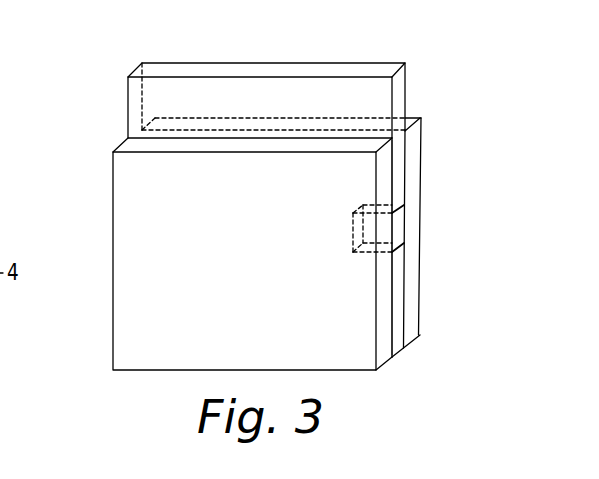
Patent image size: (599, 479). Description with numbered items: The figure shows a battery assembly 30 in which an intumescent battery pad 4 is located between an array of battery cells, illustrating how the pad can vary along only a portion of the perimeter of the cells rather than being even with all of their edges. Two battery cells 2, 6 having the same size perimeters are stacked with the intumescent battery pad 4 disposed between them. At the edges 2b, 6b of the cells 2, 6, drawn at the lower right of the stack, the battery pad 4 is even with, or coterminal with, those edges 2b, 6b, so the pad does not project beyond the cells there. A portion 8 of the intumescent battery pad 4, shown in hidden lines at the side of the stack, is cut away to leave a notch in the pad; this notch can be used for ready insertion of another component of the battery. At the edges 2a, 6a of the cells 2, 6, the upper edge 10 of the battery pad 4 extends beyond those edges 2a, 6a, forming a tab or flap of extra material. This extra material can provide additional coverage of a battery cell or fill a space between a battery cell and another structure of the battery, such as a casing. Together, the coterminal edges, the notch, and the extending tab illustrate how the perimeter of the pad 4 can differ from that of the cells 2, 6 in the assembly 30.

The refractory module assembly 30 is at (94, 59).
The battery cell 2 is at (162, 268).
The edge of battery cell 2a is at (127, 147).
The edge of battery cell 2b is at (388, 372).
The edge of battery pad 10 is at (217, 82).
The intumescent battery pad 4 is at (400, 153).
The battery cell 6 is at (415, 318).
The edge of battery cell 6a is at (408, 120).
The edge of battery cell 6b is at (413, 343).
The cut-away portion of battery pad 8 is at (400, 227).